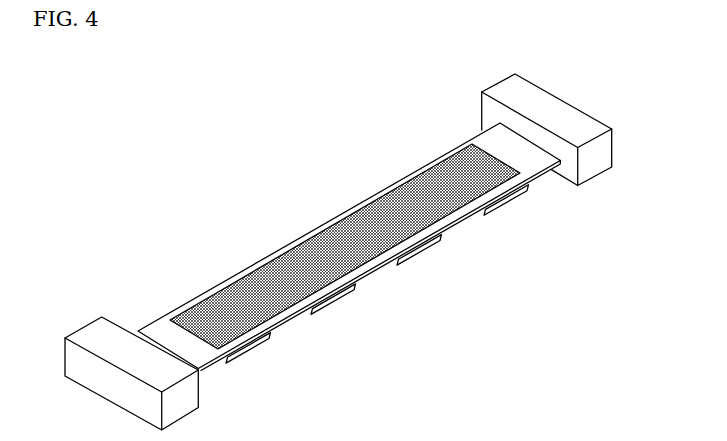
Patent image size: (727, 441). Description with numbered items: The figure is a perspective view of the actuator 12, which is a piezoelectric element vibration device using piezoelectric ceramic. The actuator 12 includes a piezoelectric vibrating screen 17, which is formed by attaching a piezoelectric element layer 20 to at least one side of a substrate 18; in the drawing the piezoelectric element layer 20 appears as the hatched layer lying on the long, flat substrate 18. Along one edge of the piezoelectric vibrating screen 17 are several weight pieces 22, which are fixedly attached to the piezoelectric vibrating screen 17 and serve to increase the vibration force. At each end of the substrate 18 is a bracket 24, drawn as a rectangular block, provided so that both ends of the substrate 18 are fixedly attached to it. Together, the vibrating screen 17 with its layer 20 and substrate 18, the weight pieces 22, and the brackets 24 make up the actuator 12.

The actuator 12 is at (398, 100).
The piezoelectric vibrating screen 17 is at (278, 397).
The substrate 18 is at (197, 352).
The piezoelectric element layer 20 is at (235, 336).
The weight pieces 22 is at (408, 244).
The bracket 24 is at (560, 118).